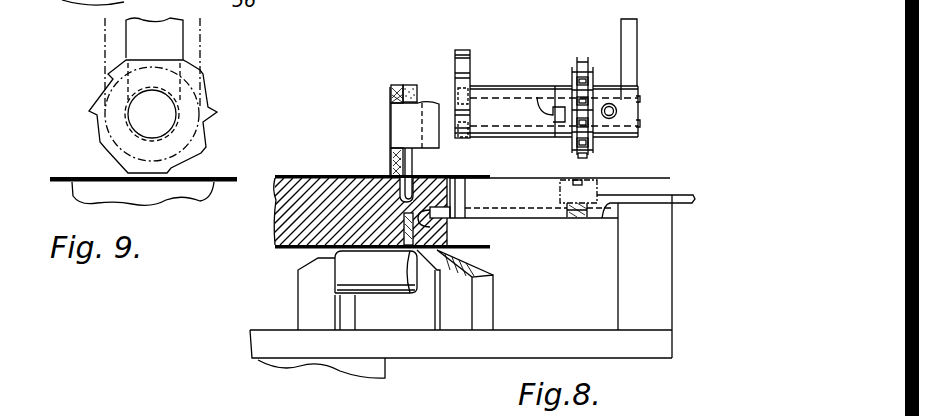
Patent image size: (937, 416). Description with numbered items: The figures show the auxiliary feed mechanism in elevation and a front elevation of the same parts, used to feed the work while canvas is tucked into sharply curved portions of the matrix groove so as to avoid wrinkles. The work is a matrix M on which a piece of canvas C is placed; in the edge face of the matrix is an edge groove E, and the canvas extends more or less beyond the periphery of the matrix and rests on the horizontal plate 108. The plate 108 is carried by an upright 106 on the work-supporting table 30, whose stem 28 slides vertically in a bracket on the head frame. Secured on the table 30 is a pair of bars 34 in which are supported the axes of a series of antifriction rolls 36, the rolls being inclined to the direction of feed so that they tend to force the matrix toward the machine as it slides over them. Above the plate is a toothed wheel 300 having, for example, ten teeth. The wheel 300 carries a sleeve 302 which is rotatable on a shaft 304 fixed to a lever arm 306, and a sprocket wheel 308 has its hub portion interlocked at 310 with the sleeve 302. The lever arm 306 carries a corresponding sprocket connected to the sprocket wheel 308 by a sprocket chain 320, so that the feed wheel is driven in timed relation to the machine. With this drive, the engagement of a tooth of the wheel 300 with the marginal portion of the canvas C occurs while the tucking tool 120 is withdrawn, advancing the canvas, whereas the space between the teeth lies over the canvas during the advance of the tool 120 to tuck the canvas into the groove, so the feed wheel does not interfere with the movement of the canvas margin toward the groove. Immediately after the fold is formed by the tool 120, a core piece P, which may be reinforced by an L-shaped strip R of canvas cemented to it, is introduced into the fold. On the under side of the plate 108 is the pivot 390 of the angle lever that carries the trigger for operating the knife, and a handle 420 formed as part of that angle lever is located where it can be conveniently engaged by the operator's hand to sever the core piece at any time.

In FIG. 8, the stem 28 is at (388, 368).
In FIG. 8, the work-supporting table 30 is at (475, 346).
In FIG. 8, the bars 34 is at (308, 290).
In FIG. 8, the antifriction rolls 36 is at (392, 280).
In FIG. 8, the upright 106 is at (630, 260).
In FIG. 8, the horizontal plate 108 is at (532, 213).
In FIG. 8, the tucking tool 120 is at (408, 162).
In FIG. 9, the toothed wheel 300 is at (188, 118).
In FIG. 8, the toothed wheel 300 is at (472, 63).
In FIG. 8, the sleeve 302 is at (505, 97).
In FIG. 8, the shaft 304 is at (640, 116).
In FIG. 9, the lever arm 306 is at (167, 43).
In FIG. 8, the lever arm 306 is at (638, 46).
In FIG. 8, the sprocket wheel 308 is at (583, 153).
In FIG. 8, the interlock 310 is at (538, 96).
In FIG. 8, the sprocket chain 320 is at (578, 60).
In FIG. 8, the pivot 390 is at (583, 202).
In FIG. 8, the handle 420 is at (686, 195).
In FIG. 9, the canvas C is at (207, 180).
In FIG. 8, the canvas C is at (478, 178).
In FIG. 9, the matrix M is at (191, 188).
In FIG. 8, the matrix M is at (290, 222).
In FIG. 8, the edge groove E is at (430, 222).
In FIG. 8, the L-shaped strip R is at (392, 88).
In FIG. 8, the core piece P is at (412, 88).